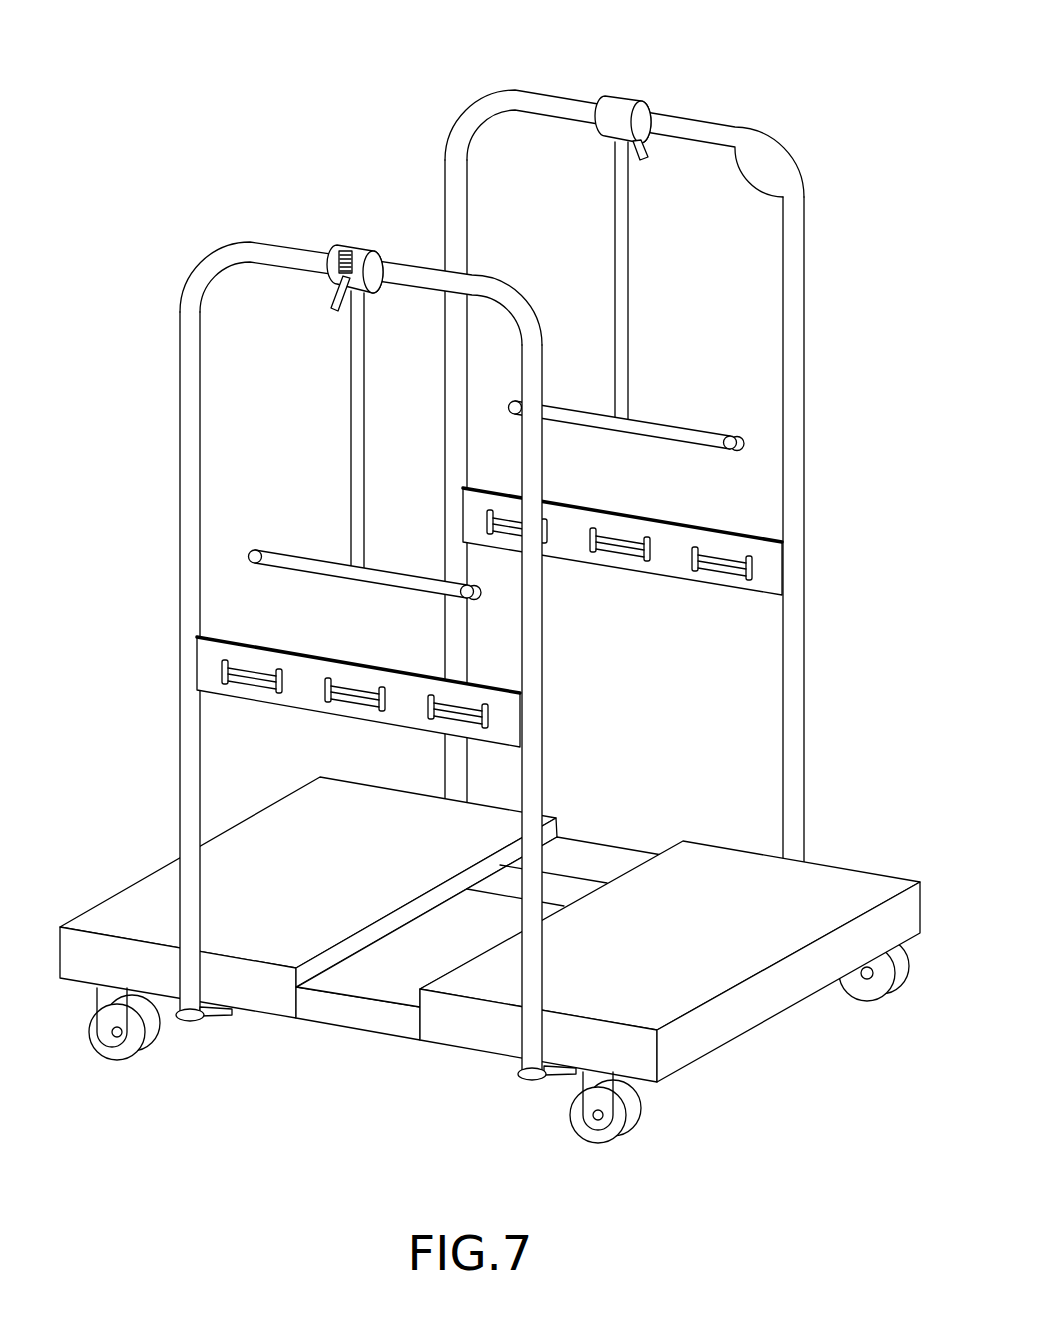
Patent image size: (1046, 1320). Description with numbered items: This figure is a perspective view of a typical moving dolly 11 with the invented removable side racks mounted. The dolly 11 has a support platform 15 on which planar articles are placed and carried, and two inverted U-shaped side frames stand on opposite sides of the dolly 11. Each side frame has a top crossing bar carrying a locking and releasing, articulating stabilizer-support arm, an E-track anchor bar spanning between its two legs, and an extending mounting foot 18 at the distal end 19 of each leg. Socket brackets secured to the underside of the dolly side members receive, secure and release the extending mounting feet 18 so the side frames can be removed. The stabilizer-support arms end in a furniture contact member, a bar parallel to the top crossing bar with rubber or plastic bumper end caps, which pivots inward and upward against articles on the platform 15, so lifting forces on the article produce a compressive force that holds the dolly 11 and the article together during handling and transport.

The moving dolly 11 is at (488, 576).
The support platform 15 is at (128, 908).
The extending mounting foot 18 is at (215, 1028).
The distal end 19 is at (183, 1023).